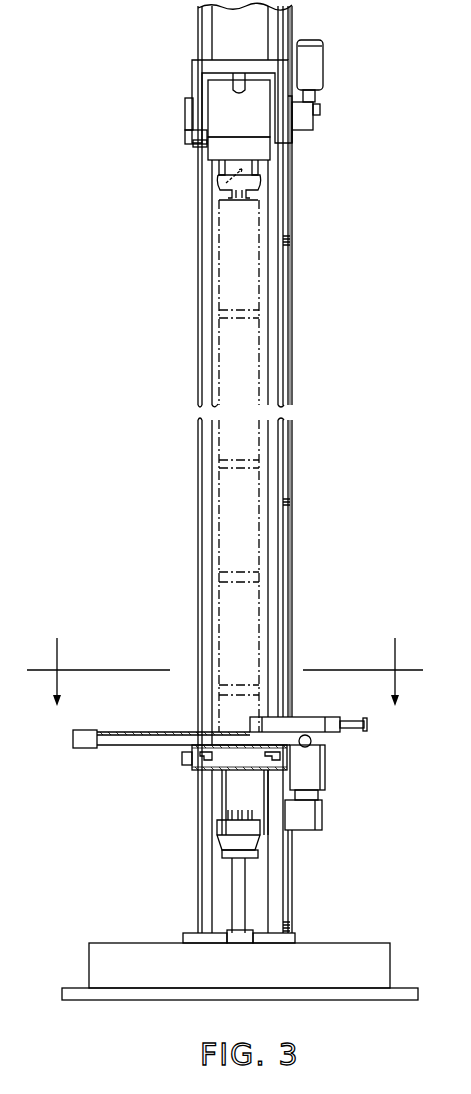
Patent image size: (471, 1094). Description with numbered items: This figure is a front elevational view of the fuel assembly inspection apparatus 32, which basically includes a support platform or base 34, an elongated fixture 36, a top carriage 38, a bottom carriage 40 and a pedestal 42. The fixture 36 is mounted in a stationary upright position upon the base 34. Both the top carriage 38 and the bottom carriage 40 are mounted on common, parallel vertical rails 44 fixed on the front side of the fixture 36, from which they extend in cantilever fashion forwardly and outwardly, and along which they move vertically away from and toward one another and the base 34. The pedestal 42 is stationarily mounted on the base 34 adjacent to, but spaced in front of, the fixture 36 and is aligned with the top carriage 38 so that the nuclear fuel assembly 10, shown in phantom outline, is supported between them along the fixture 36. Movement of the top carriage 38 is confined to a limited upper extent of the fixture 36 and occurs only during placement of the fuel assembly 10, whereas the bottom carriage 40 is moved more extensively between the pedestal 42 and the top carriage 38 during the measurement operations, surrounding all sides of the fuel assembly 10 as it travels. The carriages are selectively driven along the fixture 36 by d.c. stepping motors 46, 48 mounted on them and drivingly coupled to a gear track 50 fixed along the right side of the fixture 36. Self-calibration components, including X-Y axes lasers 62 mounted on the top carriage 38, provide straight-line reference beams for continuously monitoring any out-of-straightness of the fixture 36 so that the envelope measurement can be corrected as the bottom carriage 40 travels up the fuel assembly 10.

The nuclear fuel assembly 10 is at (225, 501).
The fuel assembly inspection apparatus 32 is at (356, 74).
The base 34 is at (89, 958).
The elongated fixture 36 is at (198, 533).
The top carriage 38 is at (222, 105).
The bottom carriage 40 is at (190, 776).
The pedestal 42 is at (232, 882).
The vertical rails 44 is at (282, 292).
The d.c. stepping motor 46 is at (312, 128).
The d.c. stepping motor 48 is at (308, 820).
The gear track 50 is at (288, 318).
The X-Y axes laser 62 is at (185, 117).